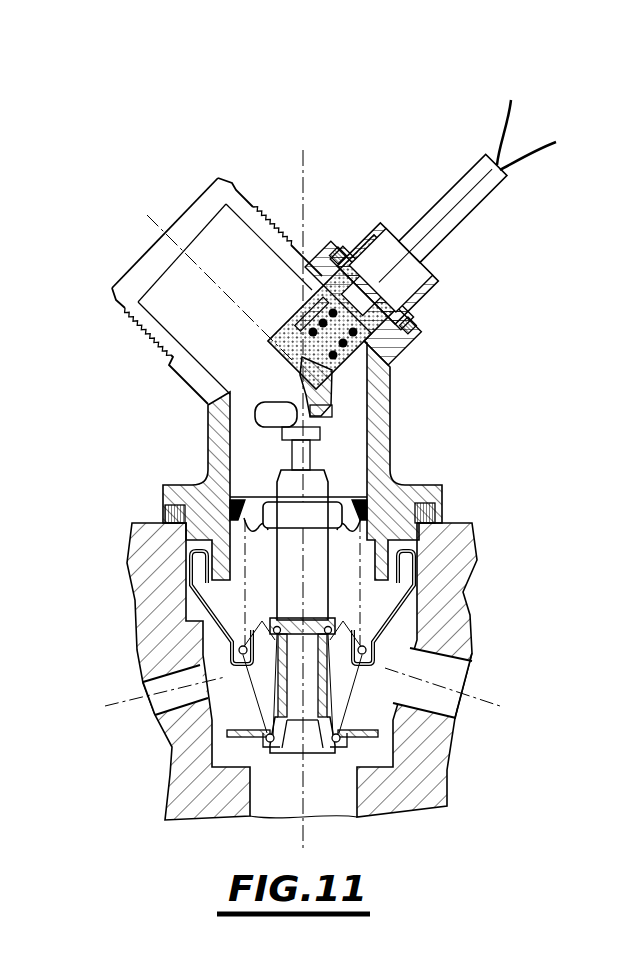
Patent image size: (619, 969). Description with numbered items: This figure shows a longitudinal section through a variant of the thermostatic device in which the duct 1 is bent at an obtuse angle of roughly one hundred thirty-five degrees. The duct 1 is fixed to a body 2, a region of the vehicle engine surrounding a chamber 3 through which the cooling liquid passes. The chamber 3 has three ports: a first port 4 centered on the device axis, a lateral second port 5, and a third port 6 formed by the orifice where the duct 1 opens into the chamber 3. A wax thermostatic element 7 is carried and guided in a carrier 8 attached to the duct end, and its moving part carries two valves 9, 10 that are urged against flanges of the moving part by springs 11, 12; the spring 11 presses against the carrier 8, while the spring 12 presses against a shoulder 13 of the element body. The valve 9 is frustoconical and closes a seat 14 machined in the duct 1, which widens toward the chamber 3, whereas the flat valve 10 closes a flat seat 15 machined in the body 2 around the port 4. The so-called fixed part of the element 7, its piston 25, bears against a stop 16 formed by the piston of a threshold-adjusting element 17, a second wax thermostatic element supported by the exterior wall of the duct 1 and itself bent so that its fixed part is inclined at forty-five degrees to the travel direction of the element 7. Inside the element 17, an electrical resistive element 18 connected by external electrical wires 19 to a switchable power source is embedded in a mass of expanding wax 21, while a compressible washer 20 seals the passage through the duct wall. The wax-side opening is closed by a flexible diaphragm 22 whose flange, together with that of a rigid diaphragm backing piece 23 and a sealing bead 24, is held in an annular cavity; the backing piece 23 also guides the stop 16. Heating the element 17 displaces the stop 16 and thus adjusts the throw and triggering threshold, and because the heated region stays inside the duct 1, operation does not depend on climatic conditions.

The duct 1 is at (390, 382).
The body 2 is at (455, 570).
The chamber 3 is at (240, 697).
The first port 4 is at (330, 792).
The second port 5 is at (432, 692).
The third port 6 is at (252, 484).
The thermostatic element 7 is at (318, 567).
The carrier 8 is at (400, 628).
The valve 9 is at (443, 493).
The valve 10 is at (350, 733).
The spring 11 is at (190, 590).
The spring 12 is at (222, 686).
The shoulder 13 is at (343, 620).
The seat 14 is at (383, 468).
The seat 15 is at (217, 755).
The stop 16 is at (350, 430).
The threshold-adjusting element 17 is at (300, 325).
The electrical resistive element 18 is at (268, 342).
The external electrical wires 19 is at (530, 148).
The washer 20 is at (343, 250).
The expanding wax 21 is at (425, 289).
The diaphragm 22 is at (300, 396).
The diaphragm backing piece 23 is at (330, 428).
The sealing bead 24 is at (330, 407).
The piston 25 is at (310, 434).